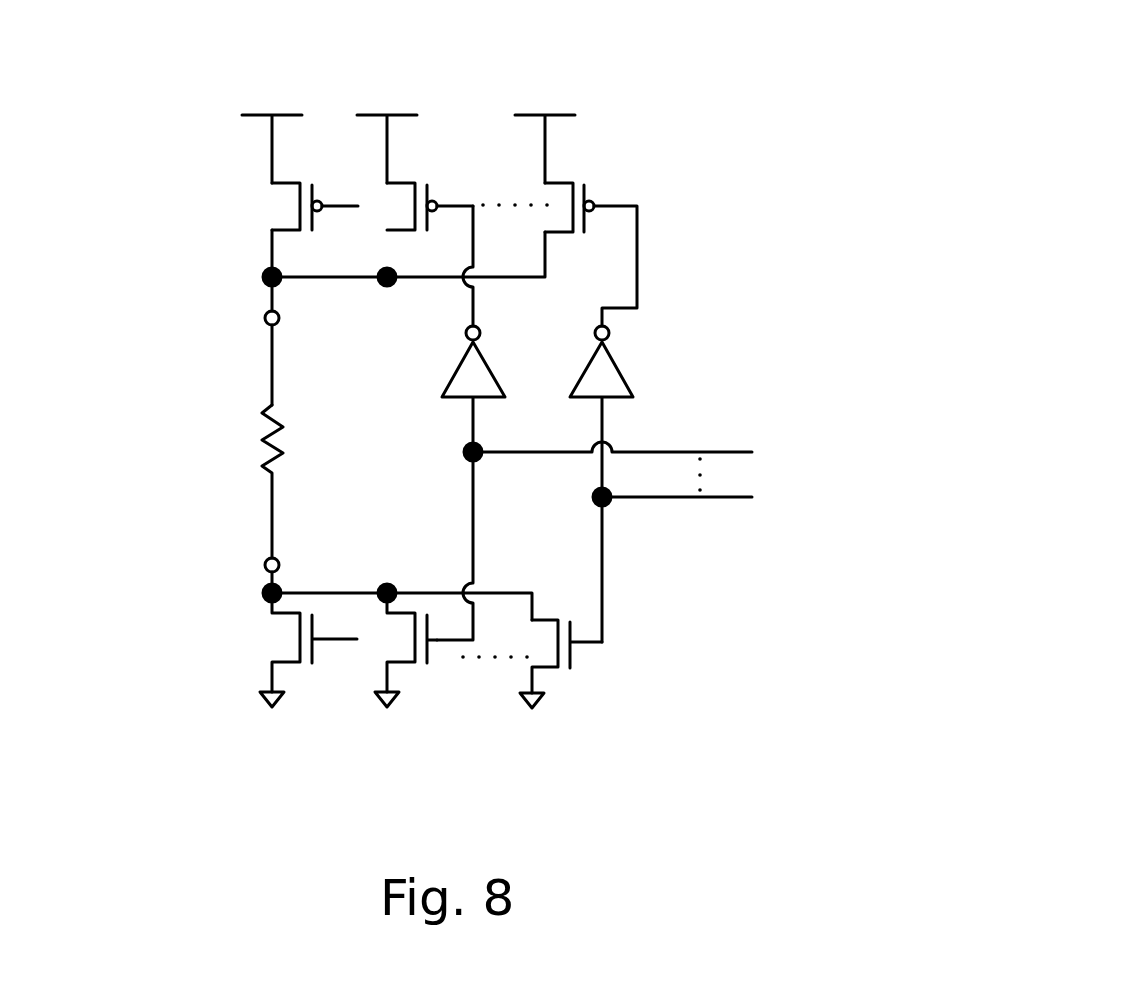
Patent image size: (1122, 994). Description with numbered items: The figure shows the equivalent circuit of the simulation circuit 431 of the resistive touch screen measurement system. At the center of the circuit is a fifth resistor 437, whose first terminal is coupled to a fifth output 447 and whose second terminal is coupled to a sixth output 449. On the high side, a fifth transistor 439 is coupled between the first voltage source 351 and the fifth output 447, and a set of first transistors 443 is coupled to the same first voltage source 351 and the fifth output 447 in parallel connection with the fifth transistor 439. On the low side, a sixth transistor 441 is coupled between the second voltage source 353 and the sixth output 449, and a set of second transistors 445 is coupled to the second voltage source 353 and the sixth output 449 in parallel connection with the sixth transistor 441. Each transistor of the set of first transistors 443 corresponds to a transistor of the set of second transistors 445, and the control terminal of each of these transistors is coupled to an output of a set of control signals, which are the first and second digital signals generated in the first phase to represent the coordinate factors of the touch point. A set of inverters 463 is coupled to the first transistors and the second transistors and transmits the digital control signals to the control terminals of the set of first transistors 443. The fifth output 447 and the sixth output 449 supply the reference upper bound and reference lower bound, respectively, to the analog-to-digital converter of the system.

The simulation circuit 431 is at (952, 123).
The first voltage source 351 is at (408, 135).
The second voltage source 353 is at (283, 698).
The fifth transistor 439 is at (296, 206).
The set of first transistors 443 is at (512, 237).
The sixth transistor 441 is at (298, 642).
The set of second transistors 445 is at (484, 643).
The fifth output 447 is at (280, 318).
The sixth output 449 is at (280, 565).
The fifth resistor 437 is at (278, 472).
The set of inverters 463 is at (442, 395).